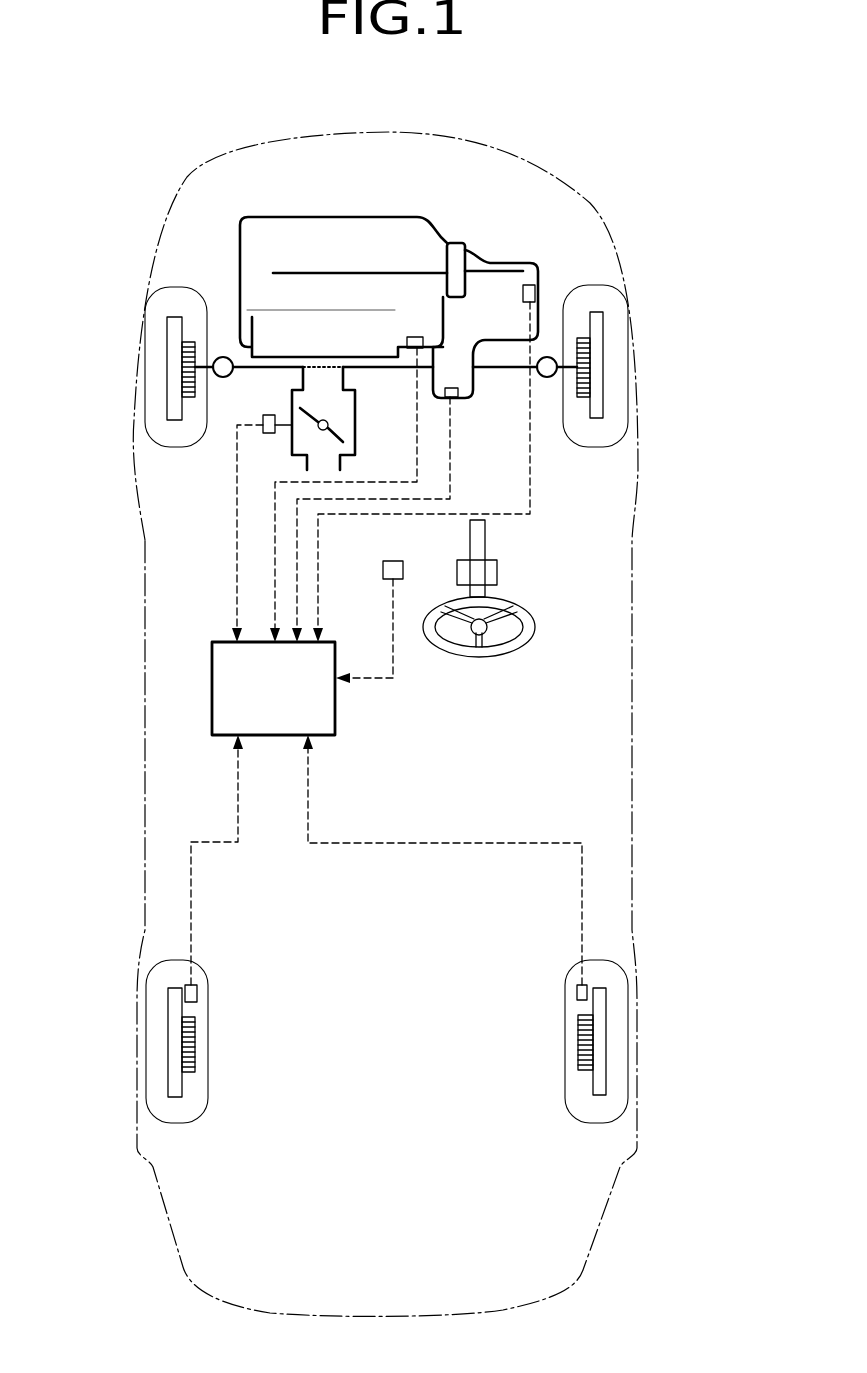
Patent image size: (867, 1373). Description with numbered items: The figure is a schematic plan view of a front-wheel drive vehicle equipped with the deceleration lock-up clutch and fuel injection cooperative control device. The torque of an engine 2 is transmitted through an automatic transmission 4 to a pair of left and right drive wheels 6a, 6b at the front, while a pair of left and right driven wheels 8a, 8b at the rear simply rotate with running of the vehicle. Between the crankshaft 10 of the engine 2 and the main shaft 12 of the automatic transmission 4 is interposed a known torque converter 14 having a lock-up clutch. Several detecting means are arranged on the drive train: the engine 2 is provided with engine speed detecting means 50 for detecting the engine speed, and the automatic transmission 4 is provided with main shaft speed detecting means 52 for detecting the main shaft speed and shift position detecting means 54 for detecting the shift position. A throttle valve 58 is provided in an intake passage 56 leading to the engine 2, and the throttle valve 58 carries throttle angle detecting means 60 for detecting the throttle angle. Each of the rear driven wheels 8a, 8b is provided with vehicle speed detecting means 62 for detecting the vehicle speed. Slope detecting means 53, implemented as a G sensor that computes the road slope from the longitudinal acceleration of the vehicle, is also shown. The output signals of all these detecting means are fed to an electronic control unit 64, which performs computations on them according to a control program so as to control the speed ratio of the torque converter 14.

The engine 2 is at (354, 210).
The automatic transmission 4 is at (500, 262).
The left drive wheel 6a is at (175, 372).
The right drive wheel 6b is at (602, 367).
The left driven wheel 8a is at (175, 1046).
The right driven wheel 8b is at (602, 1042).
The crankshaft 10 is at (273, 272).
The main shaft 12 is at (492, 270).
The torque converter 14 is at (458, 246).
The engine speed detecting means 50 is at (417, 337).
The main shaft speed detecting means 52 is at (523, 293).
The slope detecting means 53 is at (383, 570).
The shift position detecting means 54 is at (455, 399).
The intake passage 56 is at (303, 460).
The throttle valve 58 is at (345, 433).
The throttle angle detecting means 60 is at (263, 420).
The vehicle speed detecting means 62 is at (199, 992).
The electronic control unit 64 is at (337, 727).